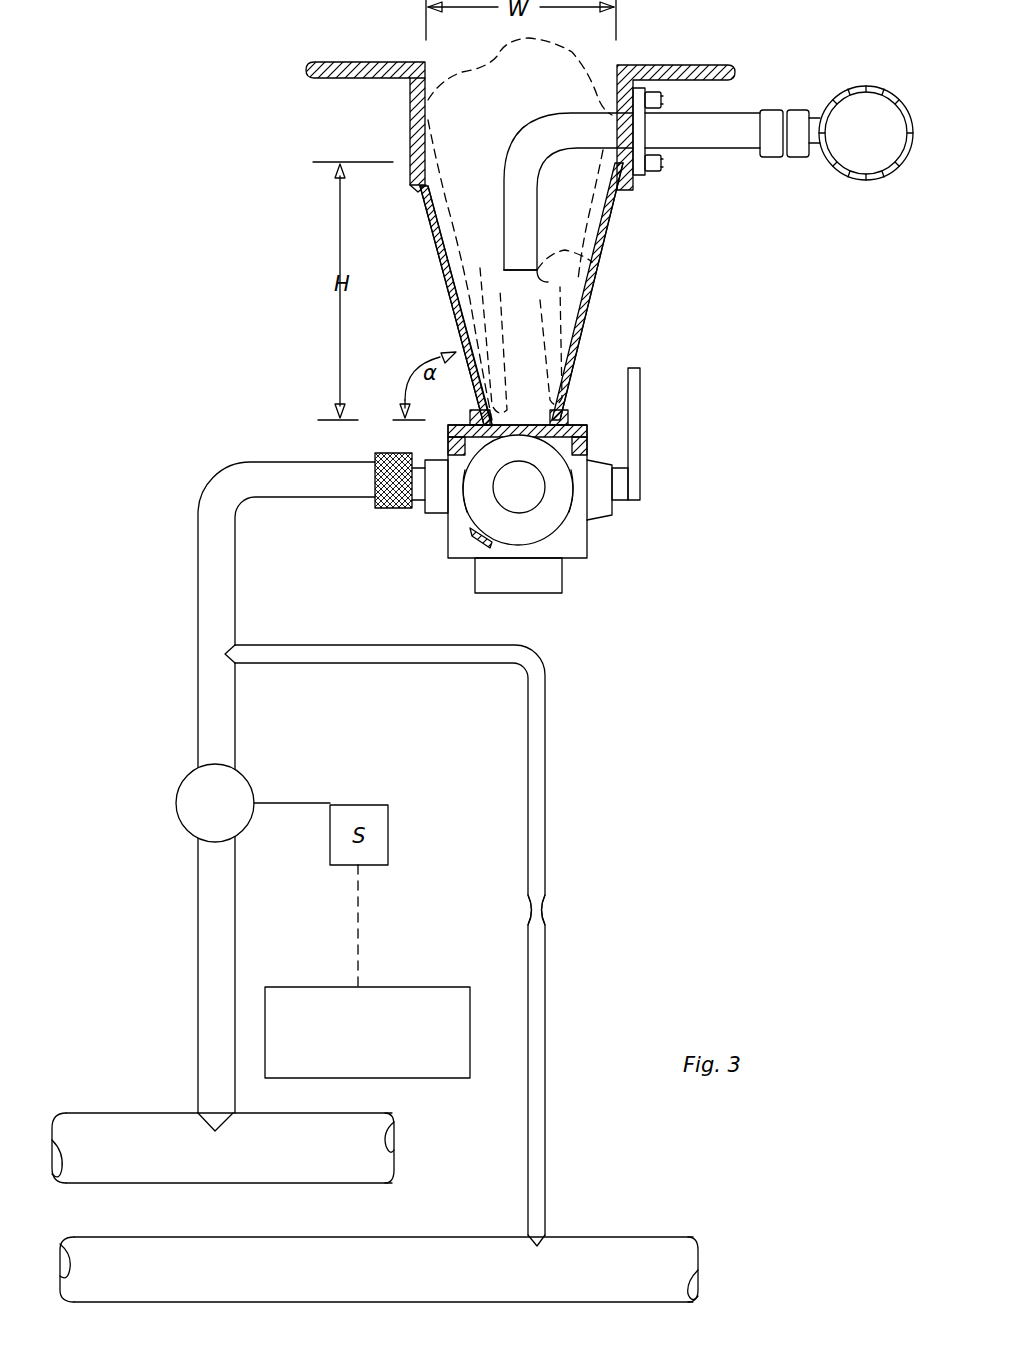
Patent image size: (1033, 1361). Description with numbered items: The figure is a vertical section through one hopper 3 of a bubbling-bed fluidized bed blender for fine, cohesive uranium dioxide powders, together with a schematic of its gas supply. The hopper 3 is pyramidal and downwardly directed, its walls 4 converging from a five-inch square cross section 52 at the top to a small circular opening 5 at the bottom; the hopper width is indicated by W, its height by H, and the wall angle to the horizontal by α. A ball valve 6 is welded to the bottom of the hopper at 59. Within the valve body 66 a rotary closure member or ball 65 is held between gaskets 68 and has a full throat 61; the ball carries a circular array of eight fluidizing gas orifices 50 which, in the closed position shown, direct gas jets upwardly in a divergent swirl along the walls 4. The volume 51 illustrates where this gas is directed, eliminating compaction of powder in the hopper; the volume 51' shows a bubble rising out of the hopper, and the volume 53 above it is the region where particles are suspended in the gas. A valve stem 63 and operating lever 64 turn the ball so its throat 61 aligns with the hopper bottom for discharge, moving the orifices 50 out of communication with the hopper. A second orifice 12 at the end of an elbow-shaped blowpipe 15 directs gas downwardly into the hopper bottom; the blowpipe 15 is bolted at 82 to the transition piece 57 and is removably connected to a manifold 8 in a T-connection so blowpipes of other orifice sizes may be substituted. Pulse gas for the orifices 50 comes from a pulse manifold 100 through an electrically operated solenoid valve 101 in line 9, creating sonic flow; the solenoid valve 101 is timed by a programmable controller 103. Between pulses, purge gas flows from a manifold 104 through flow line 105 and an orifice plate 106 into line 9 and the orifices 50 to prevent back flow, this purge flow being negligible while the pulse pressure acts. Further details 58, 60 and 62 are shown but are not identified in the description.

The hopper 3 is at (625, 262).
The walls 4 is at (462, 333).
The opening 5 is at (556, 406).
The ball valve 6 is at (543, 498).
The manifold 8 is at (862, 86).
The line 9 is at (212, 478).
The orifice 12 is at (537, 283).
The elbow-shaped blowpipe 15 is at (540, 130).
The fluidizing gas orifices 50 is at (460, 437).
The volume 51 is at (526, 294).
The volume 51' is at (568, 229).
The square cross section 52 is at (634, 182).
The volume 53 is at (448, 67).
The transition piece 57 is at (363, 62).
The flange lip 58 is at (418, 196).
The weld 59 is at (482, 413).
The retaining lip 60 is at (578, 425).
The throat 61 is at (507, 499).
The inlet fitting 62 is at (438, 507).
The valve stem 63 is at (614, 504).
The operating lever 64 is at (642, 395).
The ball 65 is at (482, 522).
The valve body 66 is at (589, 540).
The gaskets 68 is at (588, 442).
The bolts 82 is at (662, 100).
The pulse manifold 100 is at (134, 1113).
The solenoid valve 101 is at (180, 783).
The programmable controller 103 is at (417, 987).
The manifold 104 is at (437, 1236).
The flow line 105 is at (546, 850).
The orifice plate 106 is at (538, 913).